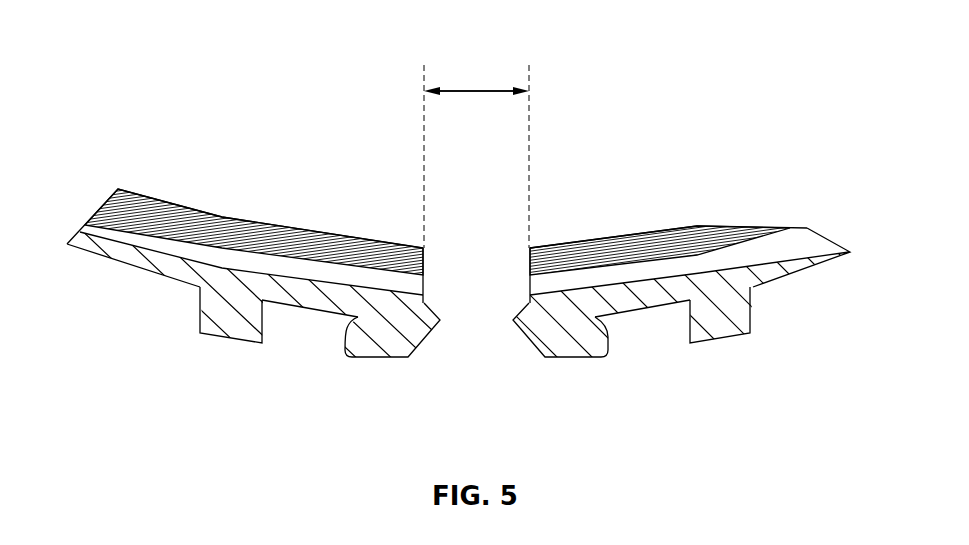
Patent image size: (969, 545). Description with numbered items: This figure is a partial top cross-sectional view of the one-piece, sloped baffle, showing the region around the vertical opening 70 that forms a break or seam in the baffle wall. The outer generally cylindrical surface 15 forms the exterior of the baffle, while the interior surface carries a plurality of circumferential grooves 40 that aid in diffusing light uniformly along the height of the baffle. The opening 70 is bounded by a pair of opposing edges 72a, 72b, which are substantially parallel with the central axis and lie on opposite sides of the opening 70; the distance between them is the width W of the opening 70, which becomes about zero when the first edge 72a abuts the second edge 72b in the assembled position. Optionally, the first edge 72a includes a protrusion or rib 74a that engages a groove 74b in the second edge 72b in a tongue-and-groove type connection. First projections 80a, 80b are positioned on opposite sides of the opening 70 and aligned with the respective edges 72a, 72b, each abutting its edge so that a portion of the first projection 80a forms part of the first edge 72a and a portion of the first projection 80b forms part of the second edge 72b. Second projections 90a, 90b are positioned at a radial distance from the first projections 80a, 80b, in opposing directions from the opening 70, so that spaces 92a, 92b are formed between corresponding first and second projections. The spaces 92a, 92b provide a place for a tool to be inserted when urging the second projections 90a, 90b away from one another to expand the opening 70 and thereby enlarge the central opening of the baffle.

The width W is at (461, 86).
The outer generally cylindrical surface 15 is at (803, 272).
The grooves 40 is at (196, 222).
The opening 70 is at (475, 242).
The first edge 72a is at (425, 285).
The second edge 72b is at (528, 287).
The rib 74a is at (436, 326).
The groove 74b is at (530, 320).
The first projection 80a is at (386, 346).
The first projection 80b is at (569, 349).
The second projection 90a is at (231, 325).
The second projection 90b is at (722, 328).
The space 92a is at (303, 350).
The space 92b is at (649, 352).